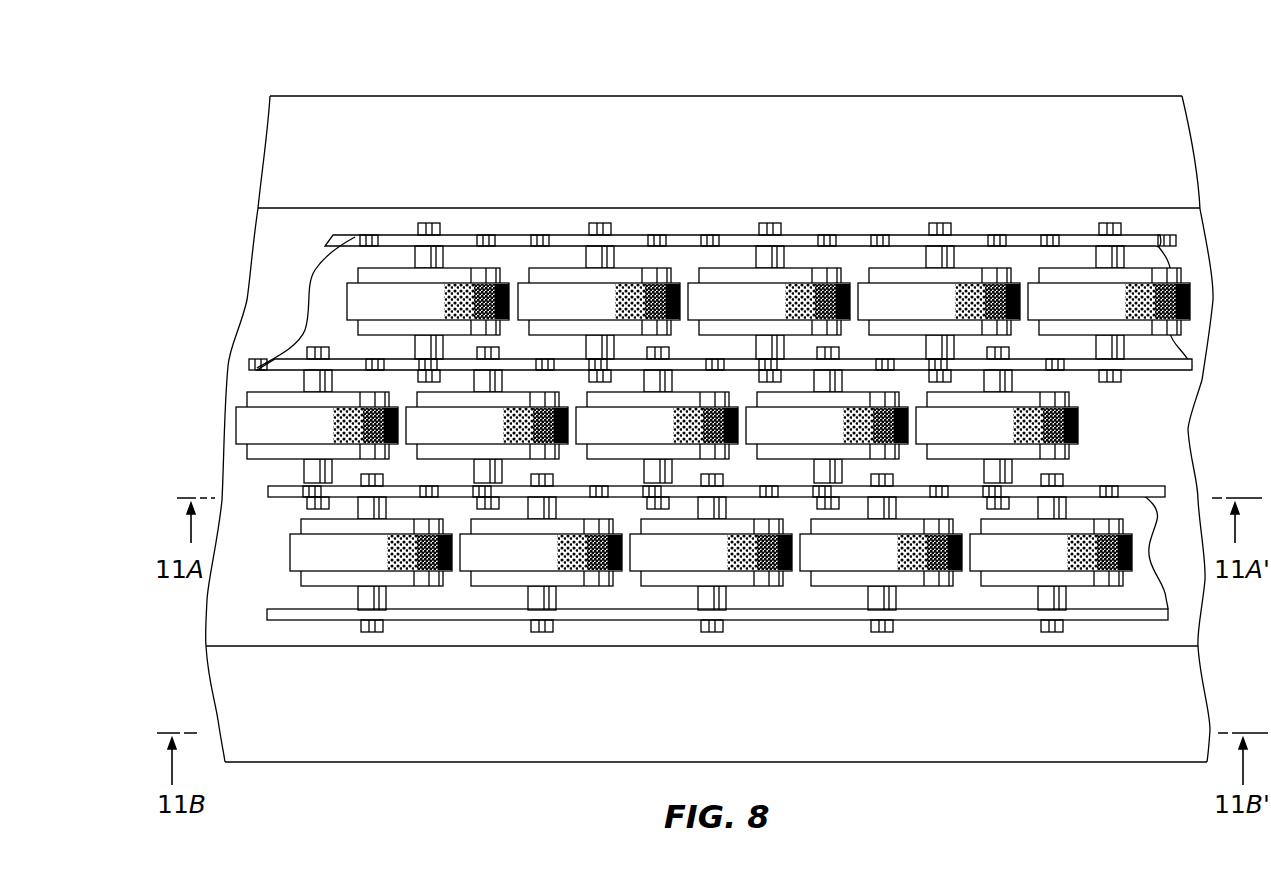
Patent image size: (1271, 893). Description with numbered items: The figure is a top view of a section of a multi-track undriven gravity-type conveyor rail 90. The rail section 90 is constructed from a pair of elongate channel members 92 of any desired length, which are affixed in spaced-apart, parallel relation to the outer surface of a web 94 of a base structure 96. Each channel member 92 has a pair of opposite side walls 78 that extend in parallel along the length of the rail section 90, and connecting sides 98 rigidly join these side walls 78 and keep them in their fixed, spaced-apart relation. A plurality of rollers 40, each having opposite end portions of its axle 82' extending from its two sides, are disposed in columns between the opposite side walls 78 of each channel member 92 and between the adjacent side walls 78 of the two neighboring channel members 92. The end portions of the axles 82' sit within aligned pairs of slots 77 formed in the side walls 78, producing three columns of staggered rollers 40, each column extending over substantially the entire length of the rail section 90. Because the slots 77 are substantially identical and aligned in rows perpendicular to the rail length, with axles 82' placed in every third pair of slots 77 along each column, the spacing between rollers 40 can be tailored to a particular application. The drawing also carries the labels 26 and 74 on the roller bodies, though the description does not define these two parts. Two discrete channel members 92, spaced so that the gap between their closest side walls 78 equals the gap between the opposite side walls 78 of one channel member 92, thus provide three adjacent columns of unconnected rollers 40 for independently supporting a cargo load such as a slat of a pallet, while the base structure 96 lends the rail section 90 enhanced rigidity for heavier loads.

The multi-track rail section 90 is at (549, 86).
The channel member 92 is at (355, 236).
The axle 82' is at (714, 435).
The roller 40 is at (893, 268).
The wheel body 26 is at (673, 278).
The side wall 78 is at (310, 280).
The connecting side 98 is at (318, 318).
The web 94 is at (228, 366).
The base structure 96 is at (676, 726).
The slot 77 is at (660, 622).
The wheel rim 74 is at (806, 572).